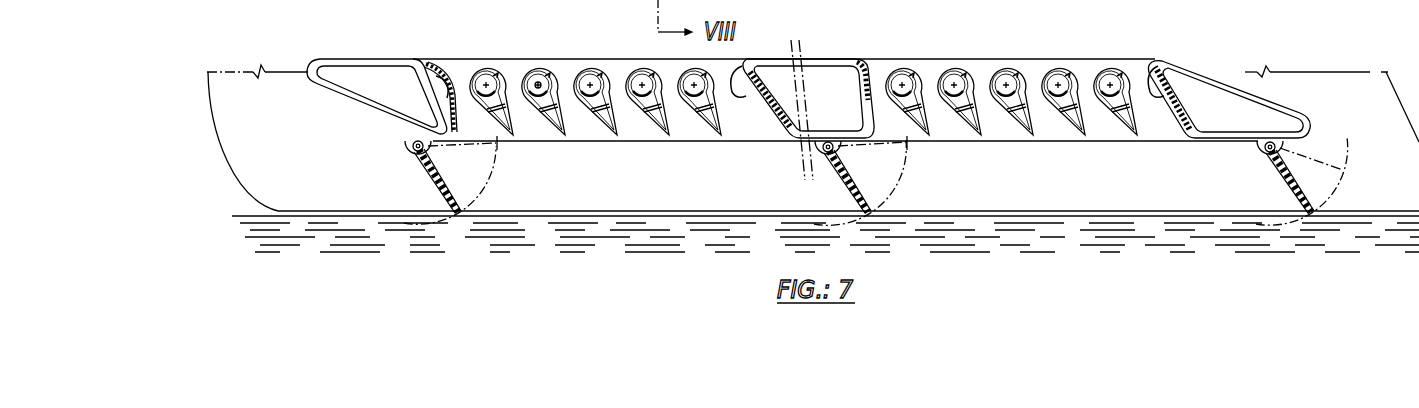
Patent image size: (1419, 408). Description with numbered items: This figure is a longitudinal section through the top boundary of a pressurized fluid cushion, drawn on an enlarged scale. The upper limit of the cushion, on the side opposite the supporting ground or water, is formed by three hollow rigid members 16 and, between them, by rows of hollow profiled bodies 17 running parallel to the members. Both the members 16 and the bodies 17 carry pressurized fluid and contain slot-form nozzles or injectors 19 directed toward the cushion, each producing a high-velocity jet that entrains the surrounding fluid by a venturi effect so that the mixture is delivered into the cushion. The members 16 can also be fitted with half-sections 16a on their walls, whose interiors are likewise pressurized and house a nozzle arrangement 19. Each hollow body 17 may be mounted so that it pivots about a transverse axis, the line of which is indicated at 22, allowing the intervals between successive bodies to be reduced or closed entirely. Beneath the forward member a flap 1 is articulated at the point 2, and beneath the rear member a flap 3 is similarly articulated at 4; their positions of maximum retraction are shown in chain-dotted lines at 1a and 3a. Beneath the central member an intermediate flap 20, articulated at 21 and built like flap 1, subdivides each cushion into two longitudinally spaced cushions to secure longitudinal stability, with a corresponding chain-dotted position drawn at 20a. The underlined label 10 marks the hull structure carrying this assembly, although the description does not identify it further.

The hull 10 is at (281, 134).
The hollow rigid member 16 is at (351, 78).
The half-section 16a is at (455, 96).
The nozzle or injector 19 is at (449, 78).
The hollow profiled body 17 is at (528, 72).
The transverse pivot axis 22 is at (541, 84).
The flap 1 is at (445, 181).
The position of maximum retraction 1a is at (498, 146).
The articulation point 2 is at (412, 147).
The intermediate flap 20 is at (853, 181).
The strut swing position 20a is at (907, 143).
The articulation point 21 is at (821, 148).
The flap 3 is at (1283, 169).
The position of maximum retraction 3a is at (1323, 167).
The articulation point 4 is at (1273, 143).